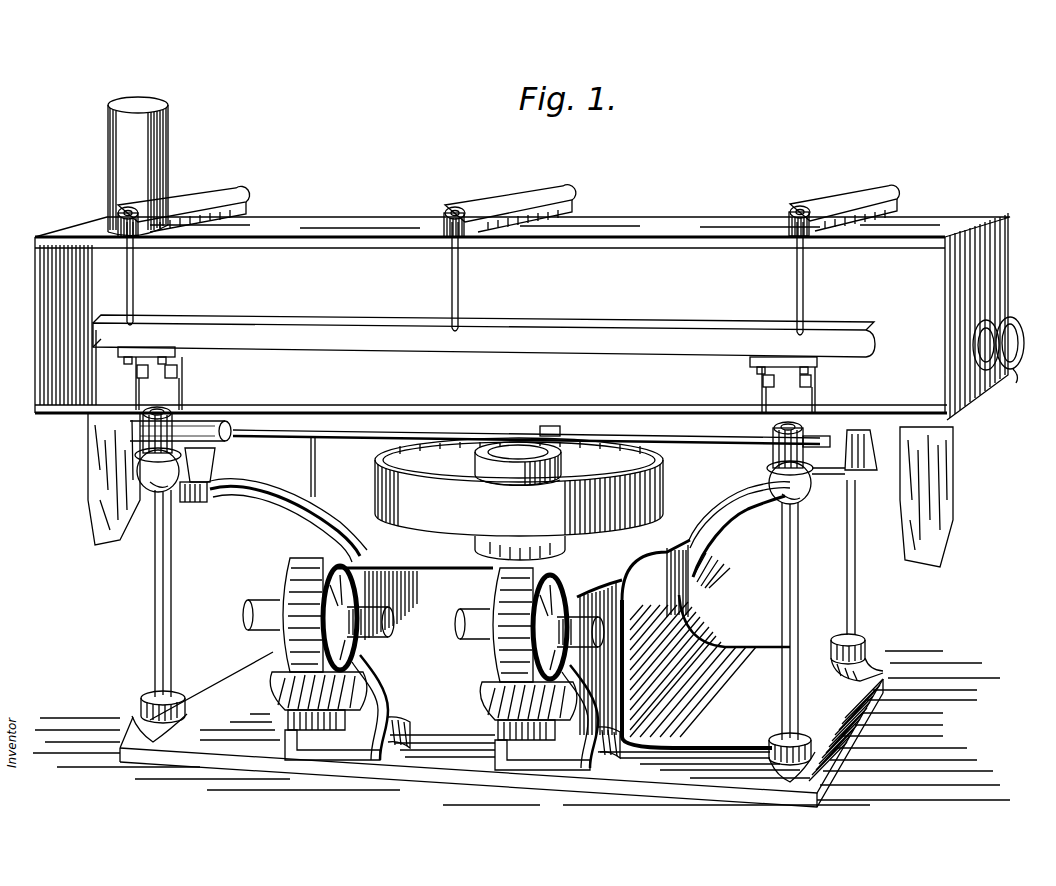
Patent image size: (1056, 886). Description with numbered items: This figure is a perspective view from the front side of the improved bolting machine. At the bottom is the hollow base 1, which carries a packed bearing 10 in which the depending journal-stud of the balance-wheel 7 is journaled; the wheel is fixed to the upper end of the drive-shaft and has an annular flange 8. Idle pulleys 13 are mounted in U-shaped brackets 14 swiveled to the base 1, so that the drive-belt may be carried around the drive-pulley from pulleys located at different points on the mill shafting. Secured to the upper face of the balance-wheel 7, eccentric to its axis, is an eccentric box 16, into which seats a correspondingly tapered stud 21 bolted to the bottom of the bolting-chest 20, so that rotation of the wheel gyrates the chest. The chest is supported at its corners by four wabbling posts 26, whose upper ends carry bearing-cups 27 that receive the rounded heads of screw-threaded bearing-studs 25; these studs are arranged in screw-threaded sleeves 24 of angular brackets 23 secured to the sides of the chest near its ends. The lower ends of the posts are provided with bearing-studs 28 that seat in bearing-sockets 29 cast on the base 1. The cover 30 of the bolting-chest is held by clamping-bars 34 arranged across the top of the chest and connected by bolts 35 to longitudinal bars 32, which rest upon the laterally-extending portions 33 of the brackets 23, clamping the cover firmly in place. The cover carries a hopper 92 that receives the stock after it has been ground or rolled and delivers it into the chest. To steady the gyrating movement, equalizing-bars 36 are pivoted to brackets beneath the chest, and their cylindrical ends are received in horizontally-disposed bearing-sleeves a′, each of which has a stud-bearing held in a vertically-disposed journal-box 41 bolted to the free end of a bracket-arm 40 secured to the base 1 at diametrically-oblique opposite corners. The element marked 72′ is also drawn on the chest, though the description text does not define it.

The hollow base 1 is at (521, 673).
The balance-wheel 7 is at (519, 487).
The annular flange 8 is at (380, 449).
The bearing 10 is at (502, 544).
The idle pulleys 13 is at (290, 577).
The U-shaped brackets 14 is at (397, 651).
The eccentric box 16 is at (575, 446).
The bolting-chest 20 is at (521, 316).
The stud 21 is at (540, 441).
The angular brackets 23 is at (475, 386).
The screw-threaded sleeves 24 is at (148, 432).
The screw-threaded bearing-studs 25 is at (150, 411).
The wabbling posts 26 is at (154, 571).
The bearing-cups 27 is at (150, 469).
The bearing-studs 28 is at (155, 695).
The bearing-sockets 29 is at (140, 712).
The cover 30 is at (383, 219).
The longitudinal bars 32 is at (355, 327).
The laterally-extending portions 33 is at (153, 348).
The clamping-bars 34 is at (226, 201).
The bolts 35 is at (135, 268).
The equalizing-bars 36 is at (323, 430).
The bracket-arms 40 is at (280, 521).
The journal-box 41 is at (870, 490).
The handle 72′ is at (1003, 368).
The hopper 92 is at (168, 143).
The bearing-sleeve a′ is at (180, 431).